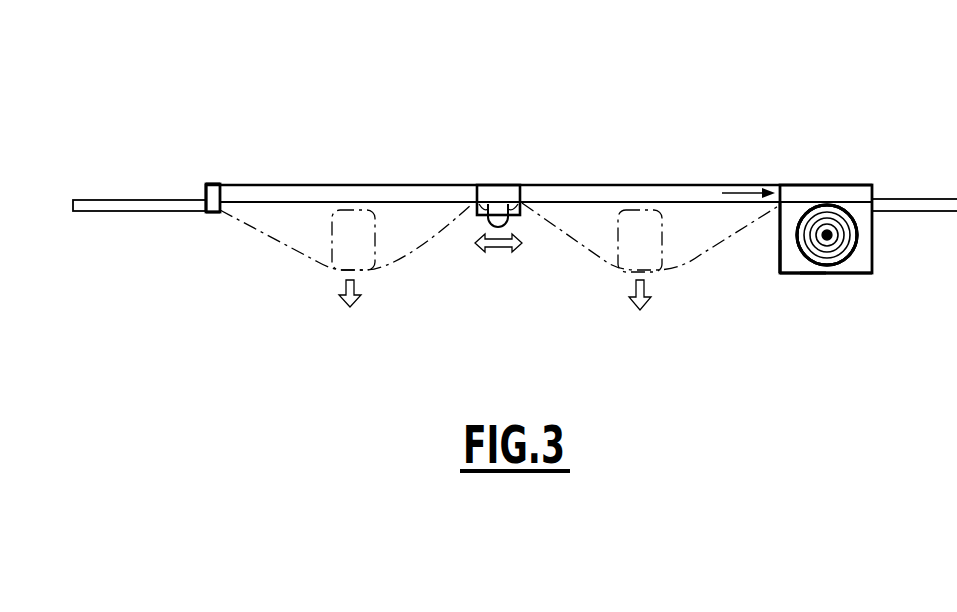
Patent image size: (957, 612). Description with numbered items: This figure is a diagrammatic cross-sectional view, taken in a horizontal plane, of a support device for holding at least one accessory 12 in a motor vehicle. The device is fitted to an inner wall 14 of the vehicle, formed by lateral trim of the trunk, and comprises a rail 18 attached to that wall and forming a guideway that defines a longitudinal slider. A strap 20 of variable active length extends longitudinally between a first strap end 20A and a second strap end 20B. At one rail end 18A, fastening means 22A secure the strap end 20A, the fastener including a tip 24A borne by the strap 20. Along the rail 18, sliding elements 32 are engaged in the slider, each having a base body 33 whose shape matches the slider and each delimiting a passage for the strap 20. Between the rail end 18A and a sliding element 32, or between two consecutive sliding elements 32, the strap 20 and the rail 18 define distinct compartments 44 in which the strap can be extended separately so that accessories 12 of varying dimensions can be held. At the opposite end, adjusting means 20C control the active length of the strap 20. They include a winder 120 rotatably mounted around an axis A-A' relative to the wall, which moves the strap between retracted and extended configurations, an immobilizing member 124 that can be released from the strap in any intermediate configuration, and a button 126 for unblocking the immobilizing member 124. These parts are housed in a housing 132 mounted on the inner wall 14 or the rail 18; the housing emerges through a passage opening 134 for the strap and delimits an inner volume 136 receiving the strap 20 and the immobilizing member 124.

The inner wall 14 is at (112, 228).
The rail 18 is at (279, 176).
The rail end 18A is at (214, 183).
The fastening means 22A is at (183, 150).
The tip 24A is at (205, 190).
The strap end 20A is at (221, 214).
The compartment 44 is at (272, 237).
The accessory 12 is at (343, 242).
The strap 20 is at (385, 282).
The sliding element 32 is at (497, 175).
The base body 33 is at (486, 222).
The passage opening 134 is at (722, 194).
The winder 120 is at (840, 258).
The housing 132 is at (779, 247).
The inner volume 136 is at (793, 260).
The strap end 20B is at (807, 260).
The adjusting means 20C is at (822, 305).
The immobilizing member 124 is at (815, 206).
The button 126 is at (832, 206).
The axis A-A' is at (870, 251).